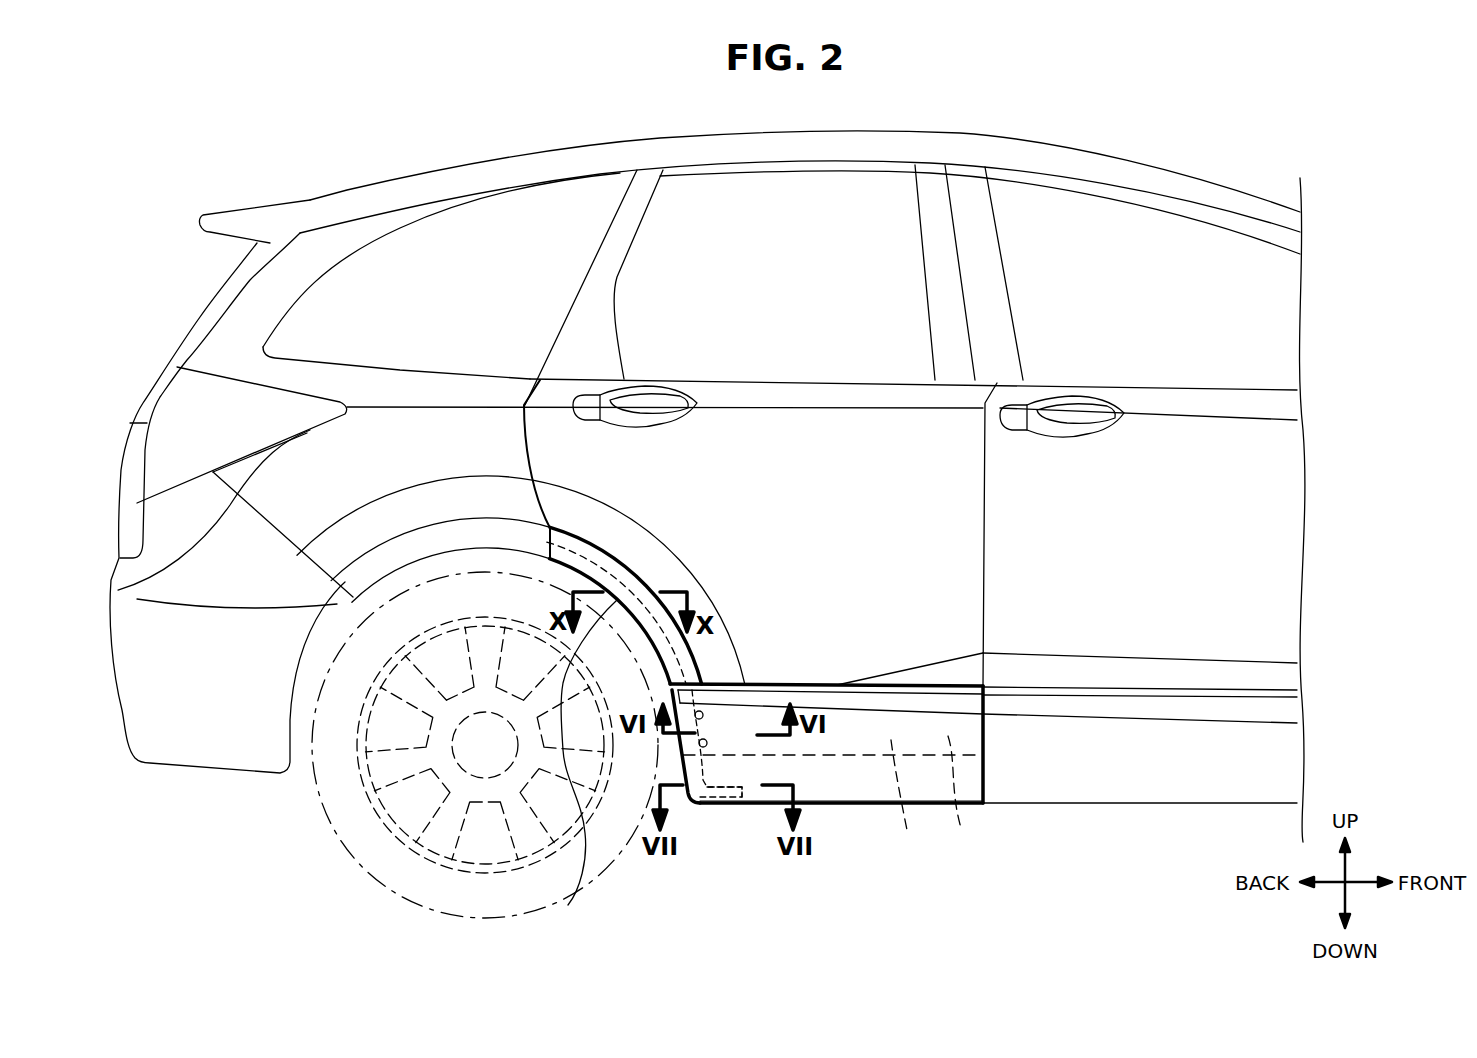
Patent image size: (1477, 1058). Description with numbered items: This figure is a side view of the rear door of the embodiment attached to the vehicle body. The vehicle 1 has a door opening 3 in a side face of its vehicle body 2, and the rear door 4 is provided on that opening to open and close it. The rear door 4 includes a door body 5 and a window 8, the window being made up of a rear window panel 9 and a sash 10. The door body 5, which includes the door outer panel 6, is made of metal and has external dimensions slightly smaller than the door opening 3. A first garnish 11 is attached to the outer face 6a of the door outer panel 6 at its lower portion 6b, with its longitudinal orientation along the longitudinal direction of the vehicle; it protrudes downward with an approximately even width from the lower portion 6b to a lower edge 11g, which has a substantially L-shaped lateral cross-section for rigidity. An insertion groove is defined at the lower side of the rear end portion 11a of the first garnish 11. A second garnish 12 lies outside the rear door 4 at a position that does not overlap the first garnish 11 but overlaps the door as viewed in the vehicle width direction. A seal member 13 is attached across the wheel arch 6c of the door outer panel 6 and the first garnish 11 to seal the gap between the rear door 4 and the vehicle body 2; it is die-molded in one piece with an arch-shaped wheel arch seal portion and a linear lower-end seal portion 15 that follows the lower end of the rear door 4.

The vehicle 1 is at (1198, 153).
The vehicle body 2 is at (580, 245).
The door opening 3 is at (613, 225).
The rear door 4 is at (1135, 258).
The door body 5 is at (928, 508).
The door outer panel 6 is at (950, 550).
The outer face 6a is at (966, 796).
The lower portion 6b is at (903, 798).
The wheel arch 6c is at (581, 775).
The window 8 is at (1073, 232).
The rear window panel 9 is at (888, 238).
The sash 10 is at (945, 298).
The first garnish 11 is at (837, 768).
The rear end portion 11a is at (683, 788).
The lower edge 11g is at (867, 805).
The second garnish 12 is at (623, 573).
The seal member 13 is at (650, 598).
The lower-end seal portion 15 is at (730, 805).